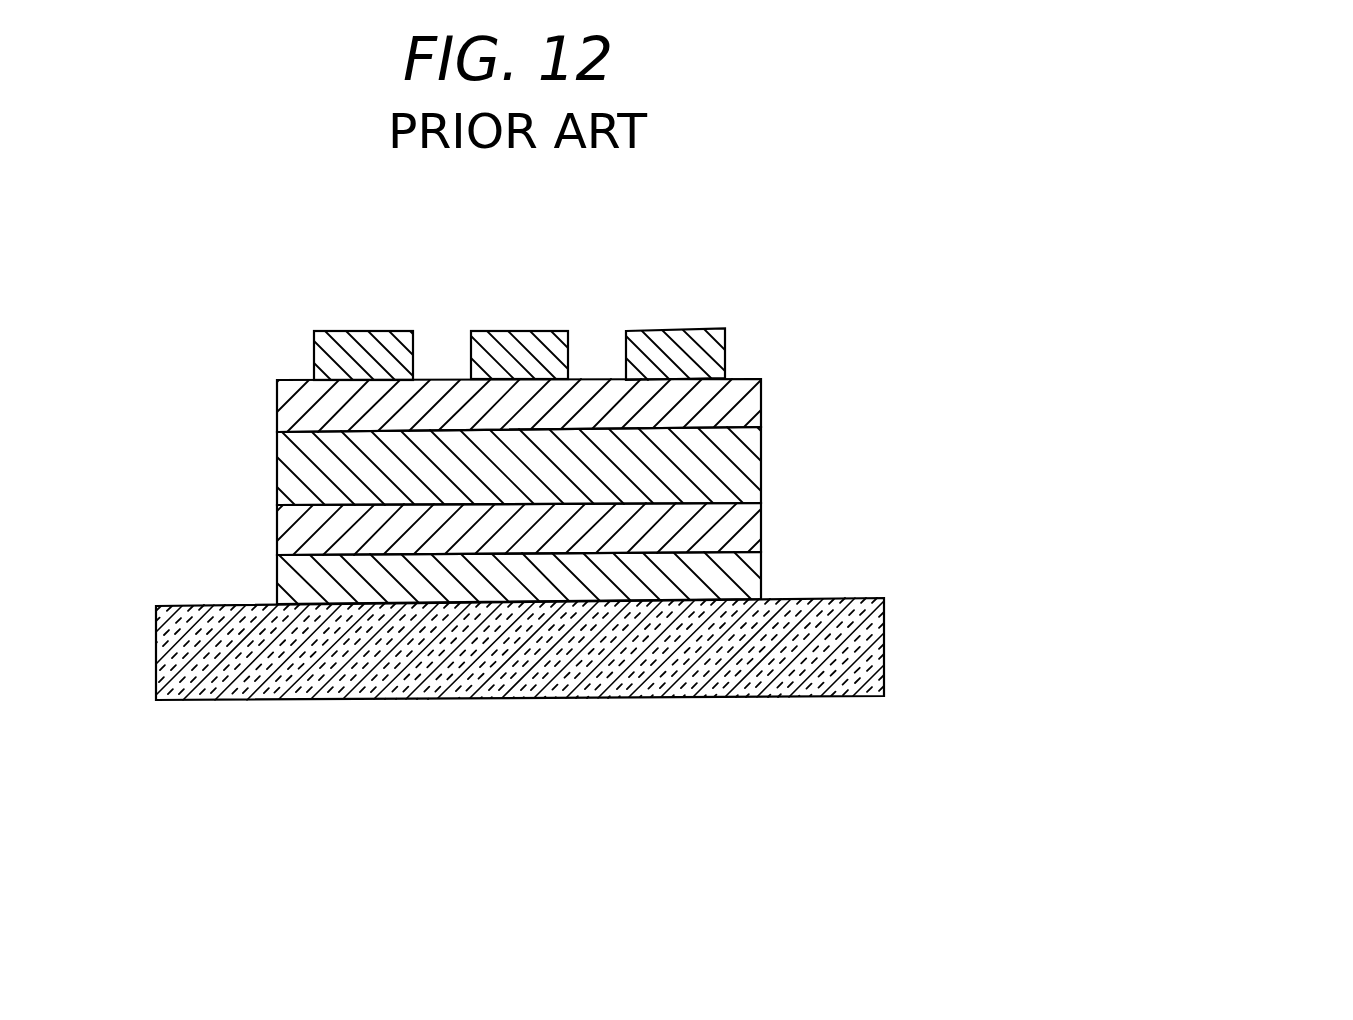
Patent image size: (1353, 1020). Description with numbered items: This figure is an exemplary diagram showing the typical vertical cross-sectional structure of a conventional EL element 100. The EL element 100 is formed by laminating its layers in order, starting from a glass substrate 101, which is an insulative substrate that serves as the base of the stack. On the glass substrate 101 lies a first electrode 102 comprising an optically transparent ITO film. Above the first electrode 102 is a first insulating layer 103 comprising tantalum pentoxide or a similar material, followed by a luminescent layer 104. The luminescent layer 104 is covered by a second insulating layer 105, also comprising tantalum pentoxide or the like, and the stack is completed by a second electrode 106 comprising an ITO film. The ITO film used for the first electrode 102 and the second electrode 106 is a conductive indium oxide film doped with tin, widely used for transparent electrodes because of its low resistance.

The EL element 100 is at (251, 229).
The glass substrate 101 is at (878, 651).
The first electrode 102 is at (750, 577).
The first insulating layer 103 is at (750, 528).
The luminescent layer 104 is at (750, 464).
The second insulating layer 105 is at (750, 402).
The second electrode 106 is at (717, 359).